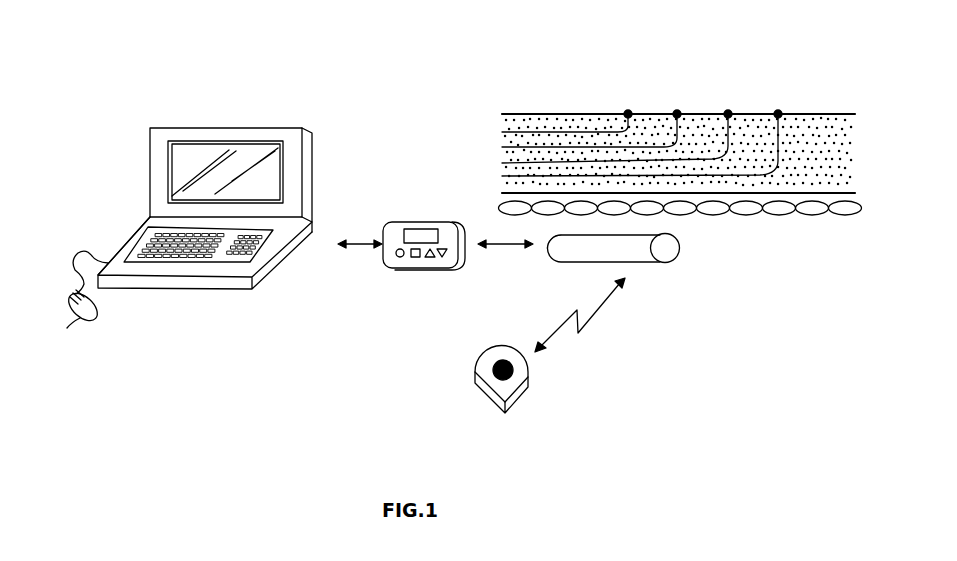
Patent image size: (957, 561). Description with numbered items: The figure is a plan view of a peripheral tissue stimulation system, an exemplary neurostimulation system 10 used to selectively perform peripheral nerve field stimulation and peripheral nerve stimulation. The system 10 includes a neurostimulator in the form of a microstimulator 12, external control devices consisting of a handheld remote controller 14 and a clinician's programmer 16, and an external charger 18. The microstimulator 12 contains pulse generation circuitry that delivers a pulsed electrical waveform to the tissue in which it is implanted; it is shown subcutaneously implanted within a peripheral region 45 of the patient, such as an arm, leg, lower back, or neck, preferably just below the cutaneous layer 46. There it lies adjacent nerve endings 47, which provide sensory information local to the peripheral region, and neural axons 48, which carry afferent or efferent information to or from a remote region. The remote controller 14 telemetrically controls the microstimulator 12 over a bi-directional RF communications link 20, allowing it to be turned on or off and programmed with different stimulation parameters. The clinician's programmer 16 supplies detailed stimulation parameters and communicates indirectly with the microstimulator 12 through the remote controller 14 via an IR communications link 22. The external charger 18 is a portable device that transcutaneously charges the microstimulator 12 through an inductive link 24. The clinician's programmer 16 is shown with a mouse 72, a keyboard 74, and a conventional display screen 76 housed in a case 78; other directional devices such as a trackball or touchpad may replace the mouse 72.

The neurostimulation system 10 is at (325, 73).
The microstimulator 12 is at (608, 276).
The handheld remote controller 14 is at (438, 213).
The clinician's programmer 16 is at (199, 213).
The external charger 18 is at (520, 397).
The bi-directional RF communications link 20 is at (543, 258).
The IR communications link 22 is at (357, 252).
The inductive link 24 is at (596, 333).
The peripheral region 45 is at (680, 148).
The cutaneous layer 46 is at (808, 143).
The nerve endings 47 is at (674, 110).
The neural axons 48 is at (680, 238).
The mouse 72 is at (67, 328).
The keyboard 74 is at (178, 254).
The display screen 76 is at (283, 157).
The case 78 is at (138, 233).